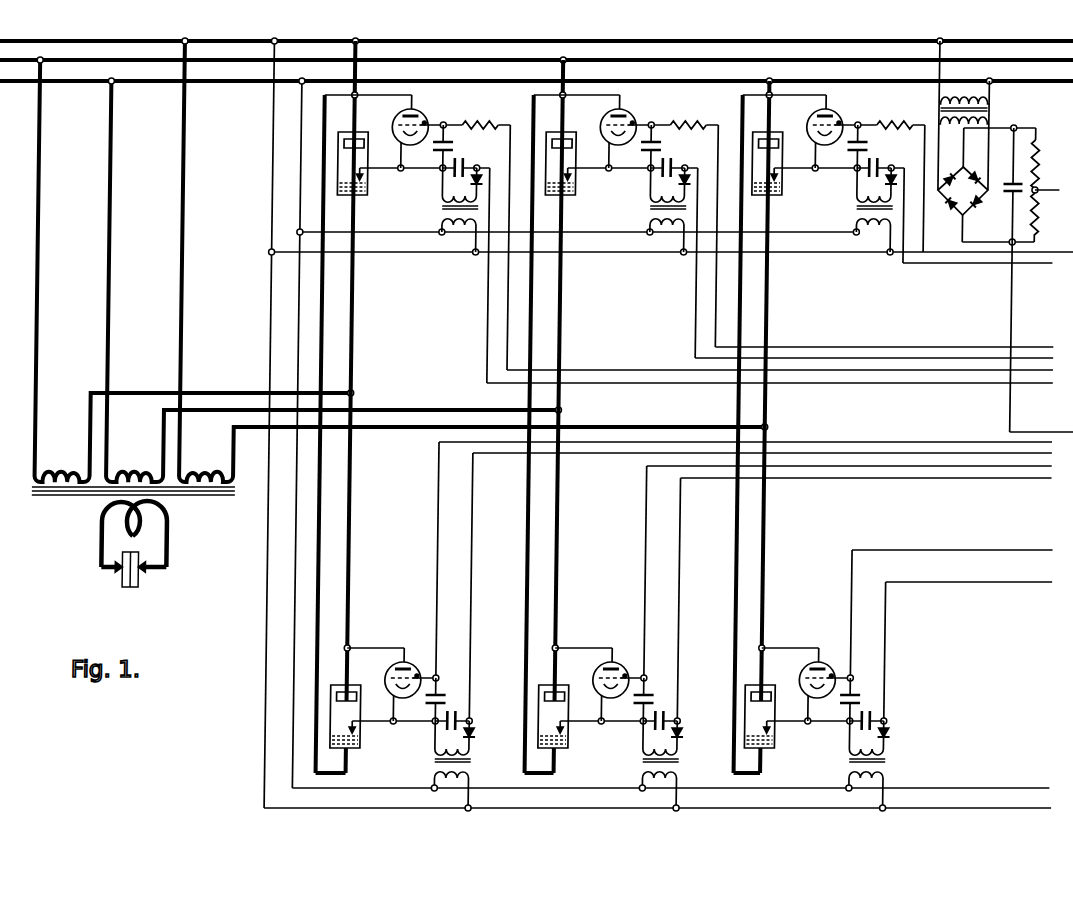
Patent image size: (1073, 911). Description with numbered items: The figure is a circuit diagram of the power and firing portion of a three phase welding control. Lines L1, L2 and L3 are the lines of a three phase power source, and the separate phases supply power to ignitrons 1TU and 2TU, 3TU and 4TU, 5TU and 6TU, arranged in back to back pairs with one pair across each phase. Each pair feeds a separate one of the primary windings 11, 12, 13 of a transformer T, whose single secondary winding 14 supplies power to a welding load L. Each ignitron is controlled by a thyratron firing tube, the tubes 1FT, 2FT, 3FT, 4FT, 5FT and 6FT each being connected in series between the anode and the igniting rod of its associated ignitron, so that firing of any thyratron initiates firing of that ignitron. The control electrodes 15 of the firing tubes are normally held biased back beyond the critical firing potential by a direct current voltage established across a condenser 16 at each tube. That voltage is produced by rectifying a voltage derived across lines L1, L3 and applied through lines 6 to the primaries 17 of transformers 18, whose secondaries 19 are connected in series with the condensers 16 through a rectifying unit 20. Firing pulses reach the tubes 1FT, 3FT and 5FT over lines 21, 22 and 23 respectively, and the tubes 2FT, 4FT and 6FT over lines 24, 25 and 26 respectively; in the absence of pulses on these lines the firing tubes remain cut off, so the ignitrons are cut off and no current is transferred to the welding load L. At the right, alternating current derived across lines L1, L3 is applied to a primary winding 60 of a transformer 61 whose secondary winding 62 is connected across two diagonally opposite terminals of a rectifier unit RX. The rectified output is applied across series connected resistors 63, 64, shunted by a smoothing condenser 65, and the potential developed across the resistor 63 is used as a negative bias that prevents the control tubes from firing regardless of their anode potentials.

The line of three phase power source L1 is at (31, 44).
The line of three phase power source L2 is at (32, 63).
The line of three phase power source L3 is at (32, 84).
The lines 6 is at (303, 192).
The primary winding 11 is at (54, 467).
The primary winding 12 is at (127, 468).
The primary winding 13 is at (199, 467).
The transformer T is at (22, 492).
The secondary winding 14 is at (167, 507).
The welding load L is at (139, 588).
The control electrode 15 is at (600, 412).
The condenser 16 is at (669, 427).
The primary 17 is at (662, 513).
The transformer 18 is at (654, 485).
The secondary 19 is at (652, 461).
The rectifying unit 20 is at (694, 449).
The line 21 is at (1048, 383).
The line 22 is at (1047, 347).
The line 23 is at (1052, 263).
The line 24 is at (984, 443).
The line 25 is at (1047, 478).
The line 26 is at (1040, 582).
The primary winding 60 is at (994, 102).
The transformer 61 is at (934, 113).
The secondary winding 62 is at (994, 122).
The resistor 63 is at (1034, 222).
The resistor 64 is at (1039, 138).
The smoothing condenser 65 is at (1008, 194).
The rectifier unit RX is at (951, 228).
The thyratron firing tube 1FT is at (388, 103).
The thyratron firing tube 2FT is at (385, 644).
The thyratron firing tube 3FT is at (596, 103).
The thyratron firing tube 4FT is at (593, 644).
The thyratron firing tube 5FT is at (804, 103).
The thyratron firing tube 6FT is at (800, 644).
The ignitron 1TU is at (365, 173).
The ignitron 2TU is at (358, 726).
The ignitron 3TU is at (573, 173).
The ignitron 4TU is at (566, 726).
The ignitron 5TU is at (780, 173).
The ignitron 6TU is at (772, 726).